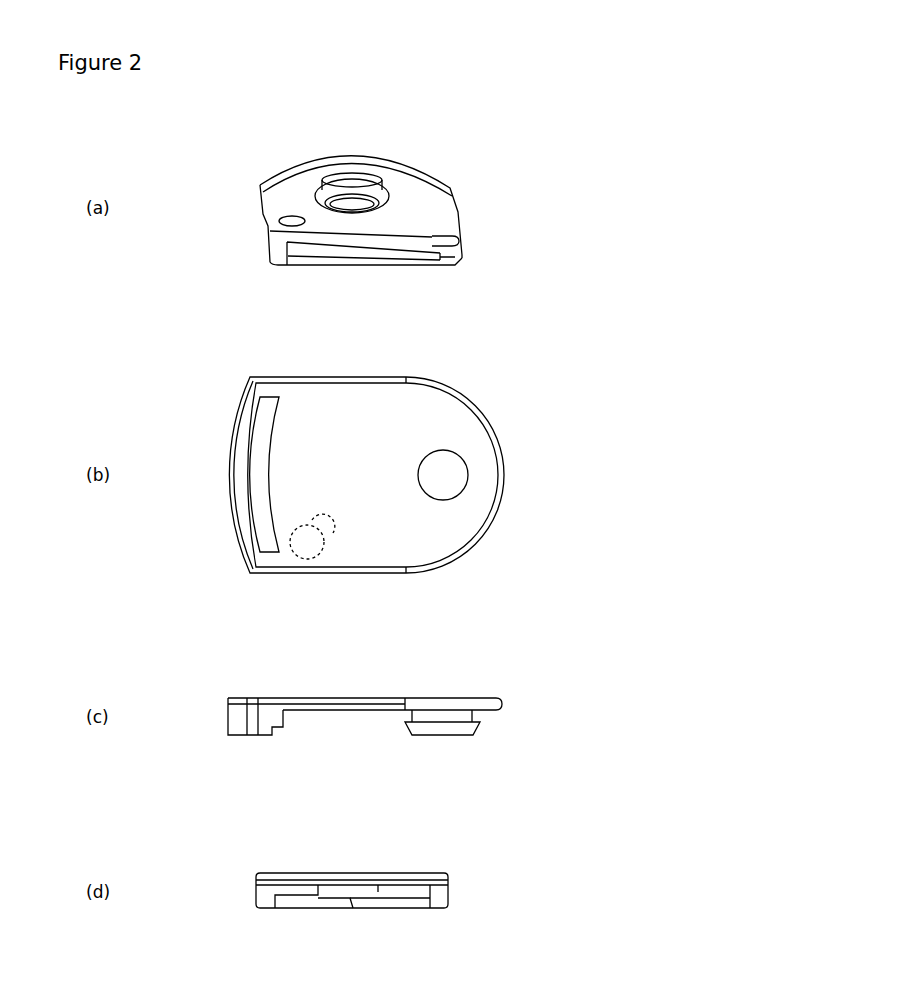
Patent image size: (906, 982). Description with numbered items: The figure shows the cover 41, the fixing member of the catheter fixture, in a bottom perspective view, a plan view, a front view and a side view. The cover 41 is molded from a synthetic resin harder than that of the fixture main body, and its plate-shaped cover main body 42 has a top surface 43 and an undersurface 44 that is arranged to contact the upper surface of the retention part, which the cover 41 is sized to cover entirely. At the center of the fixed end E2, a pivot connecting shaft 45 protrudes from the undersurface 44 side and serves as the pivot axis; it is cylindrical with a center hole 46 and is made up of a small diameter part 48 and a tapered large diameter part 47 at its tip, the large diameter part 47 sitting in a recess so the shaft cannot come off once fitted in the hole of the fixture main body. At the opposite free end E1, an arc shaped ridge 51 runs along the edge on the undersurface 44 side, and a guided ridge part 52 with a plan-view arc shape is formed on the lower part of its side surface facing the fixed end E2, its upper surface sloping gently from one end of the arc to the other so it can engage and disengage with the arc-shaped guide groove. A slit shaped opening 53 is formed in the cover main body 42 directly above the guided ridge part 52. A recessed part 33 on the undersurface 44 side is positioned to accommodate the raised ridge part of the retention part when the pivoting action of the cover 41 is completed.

The recessed part 33 is at (283, 223).
The cover 41 is at (177, 183).
The cover main body 42 is at (460, 205).
The top surface 43 is at (353, 477).
The undersurface 44 is at (414, 221).
The pivot connecting shaft 45 is at (326, 178).
The center hole 46 is at (350, 200).
The large diameter part 47 is at (393, 204).
The small diameter part 48 is at (378, 173).
The arc shaped ridge 51 is at (400, 257).
The guided ridge part 52 is at (318, 258).
The slit shaped opening 53 is at (460, 238).
The free end E1 is at (462, 269).
The fixed end E2 is at (286, 163).